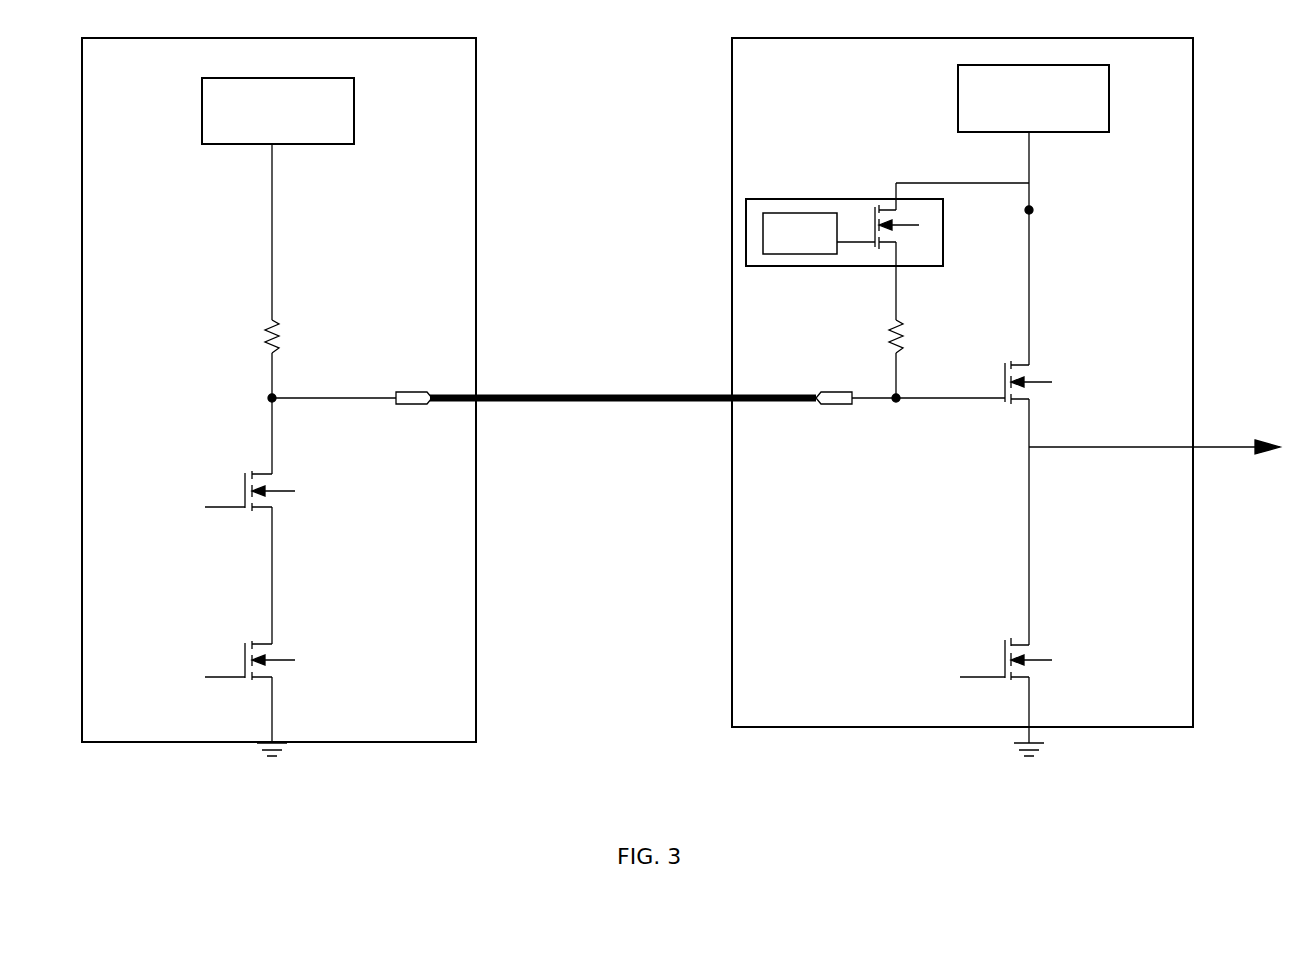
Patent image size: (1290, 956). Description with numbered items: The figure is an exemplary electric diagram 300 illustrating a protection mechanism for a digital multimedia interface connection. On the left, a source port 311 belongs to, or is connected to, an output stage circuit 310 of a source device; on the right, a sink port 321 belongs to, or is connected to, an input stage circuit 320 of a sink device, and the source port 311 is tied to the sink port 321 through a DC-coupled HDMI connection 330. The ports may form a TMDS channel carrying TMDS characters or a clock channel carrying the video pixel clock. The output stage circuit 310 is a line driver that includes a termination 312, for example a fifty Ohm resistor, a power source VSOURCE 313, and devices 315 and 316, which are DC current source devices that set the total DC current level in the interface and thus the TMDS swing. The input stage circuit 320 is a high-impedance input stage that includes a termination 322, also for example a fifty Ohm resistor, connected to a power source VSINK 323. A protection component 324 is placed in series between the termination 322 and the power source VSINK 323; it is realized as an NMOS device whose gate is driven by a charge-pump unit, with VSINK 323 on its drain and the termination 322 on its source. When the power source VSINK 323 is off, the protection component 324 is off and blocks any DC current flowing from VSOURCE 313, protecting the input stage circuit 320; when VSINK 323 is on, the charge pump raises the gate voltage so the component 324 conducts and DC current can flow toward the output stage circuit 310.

The electric diagram 300 is at (597, 66).
The output stage circuit 310 is at (476, 118).
The source port 311 is at (425, 407).
The termination 312 is at (287, 338).
The power source VSOURCE 313 is at (245, 146).
The device 315 is at (208, 652).
The device 316 is at (208, 518).
The input stage circuit 320 is at (732, 95).
The sink port 321 is at (836, 407).
The termination 322 is at (920, 337).
The power source VSINK 323 is at (958, 92).
The protection component 324 is at (845, 267).
The DC-coupled HDMI connection 330 is at (652, 403).